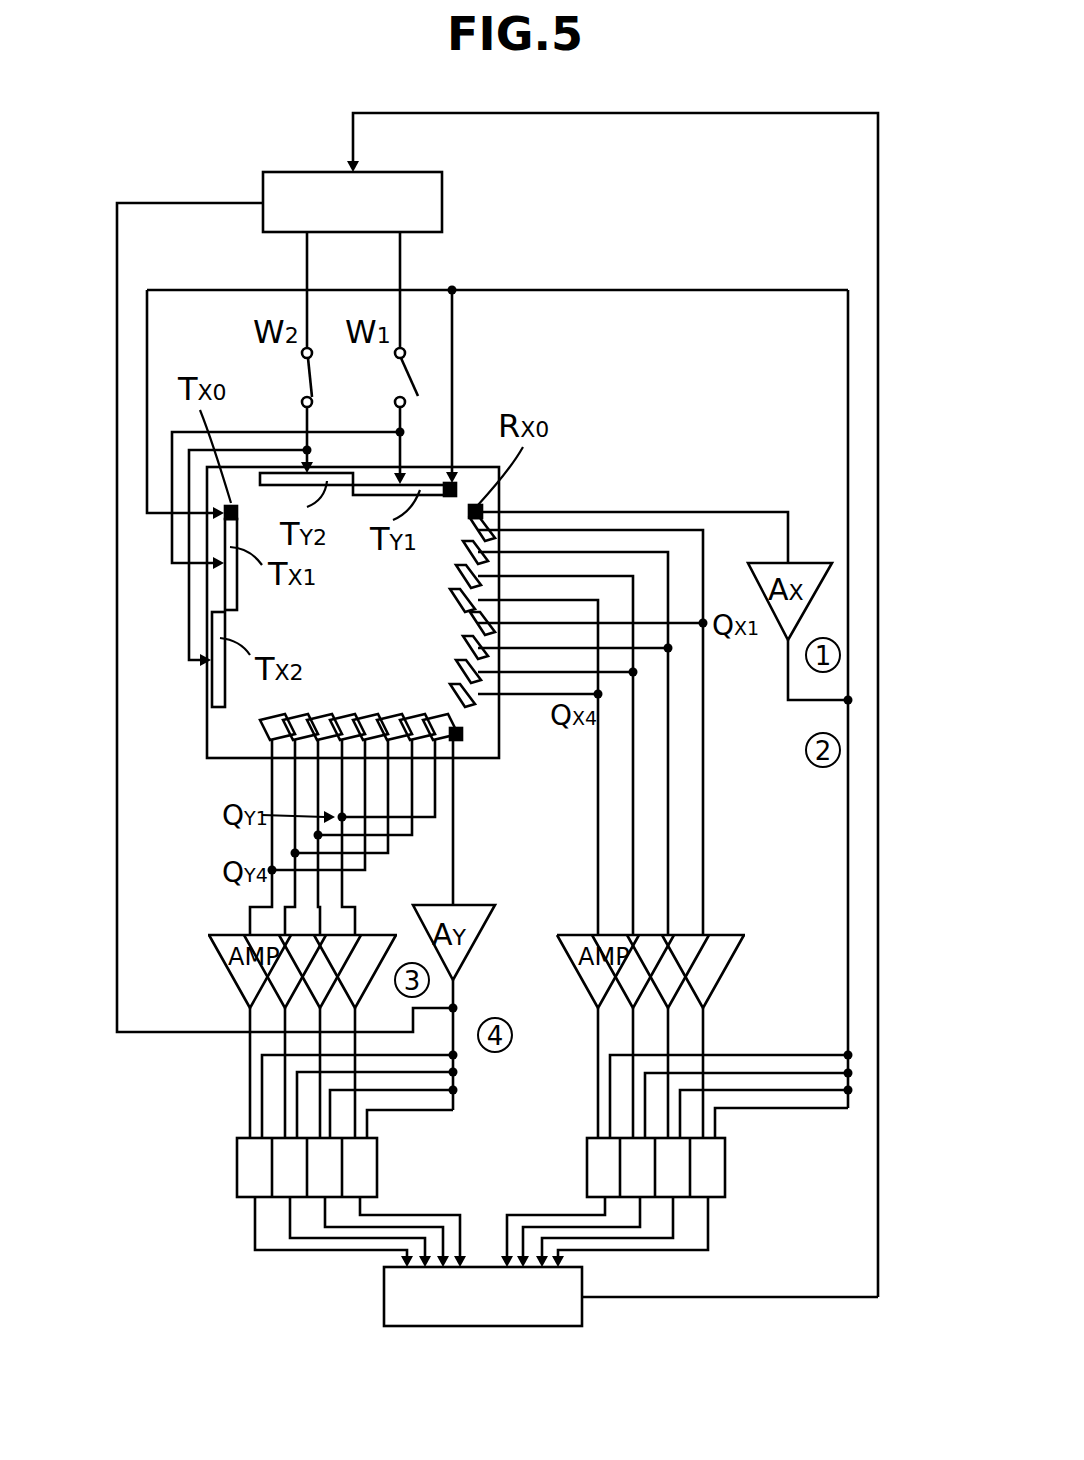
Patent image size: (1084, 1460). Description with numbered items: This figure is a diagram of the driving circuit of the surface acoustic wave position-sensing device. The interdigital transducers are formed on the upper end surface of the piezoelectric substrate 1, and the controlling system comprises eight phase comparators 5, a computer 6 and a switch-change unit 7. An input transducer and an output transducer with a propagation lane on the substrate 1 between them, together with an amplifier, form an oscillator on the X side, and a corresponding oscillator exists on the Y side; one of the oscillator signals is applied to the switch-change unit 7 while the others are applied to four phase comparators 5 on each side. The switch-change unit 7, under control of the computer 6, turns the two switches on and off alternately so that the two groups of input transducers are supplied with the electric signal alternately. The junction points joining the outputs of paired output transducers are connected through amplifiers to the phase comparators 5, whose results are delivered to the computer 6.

The piezoelectric substrate 1 is at (487, 743).
The phase comparators 5 is at (481, 1167).
The computer 6 is at (483, 1296).
The switch-change unit 7 is at (352, 202).